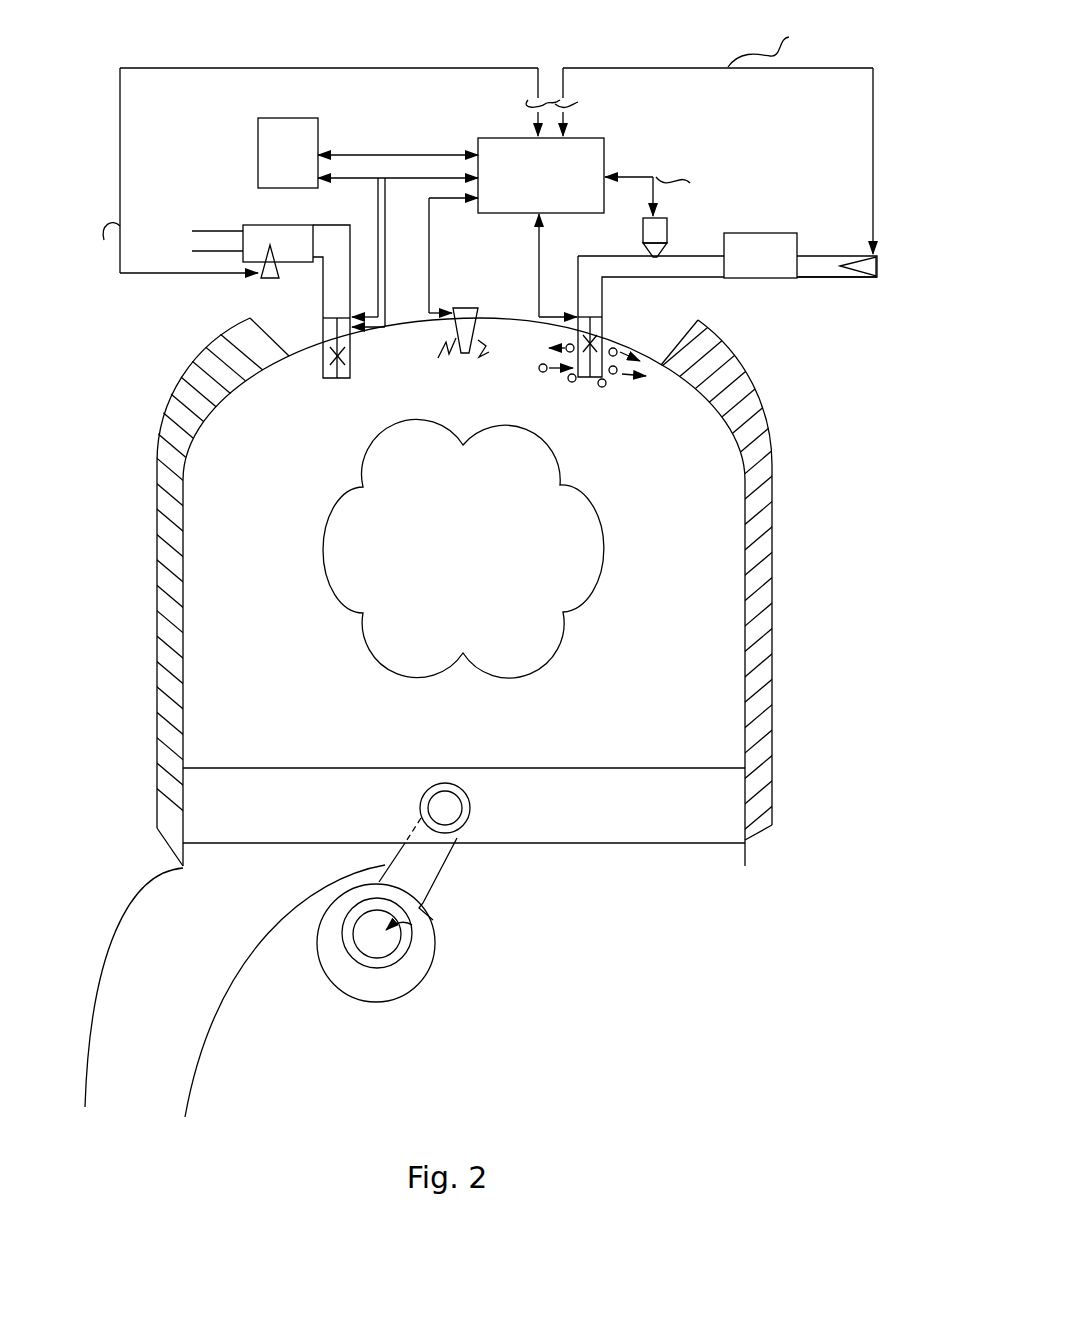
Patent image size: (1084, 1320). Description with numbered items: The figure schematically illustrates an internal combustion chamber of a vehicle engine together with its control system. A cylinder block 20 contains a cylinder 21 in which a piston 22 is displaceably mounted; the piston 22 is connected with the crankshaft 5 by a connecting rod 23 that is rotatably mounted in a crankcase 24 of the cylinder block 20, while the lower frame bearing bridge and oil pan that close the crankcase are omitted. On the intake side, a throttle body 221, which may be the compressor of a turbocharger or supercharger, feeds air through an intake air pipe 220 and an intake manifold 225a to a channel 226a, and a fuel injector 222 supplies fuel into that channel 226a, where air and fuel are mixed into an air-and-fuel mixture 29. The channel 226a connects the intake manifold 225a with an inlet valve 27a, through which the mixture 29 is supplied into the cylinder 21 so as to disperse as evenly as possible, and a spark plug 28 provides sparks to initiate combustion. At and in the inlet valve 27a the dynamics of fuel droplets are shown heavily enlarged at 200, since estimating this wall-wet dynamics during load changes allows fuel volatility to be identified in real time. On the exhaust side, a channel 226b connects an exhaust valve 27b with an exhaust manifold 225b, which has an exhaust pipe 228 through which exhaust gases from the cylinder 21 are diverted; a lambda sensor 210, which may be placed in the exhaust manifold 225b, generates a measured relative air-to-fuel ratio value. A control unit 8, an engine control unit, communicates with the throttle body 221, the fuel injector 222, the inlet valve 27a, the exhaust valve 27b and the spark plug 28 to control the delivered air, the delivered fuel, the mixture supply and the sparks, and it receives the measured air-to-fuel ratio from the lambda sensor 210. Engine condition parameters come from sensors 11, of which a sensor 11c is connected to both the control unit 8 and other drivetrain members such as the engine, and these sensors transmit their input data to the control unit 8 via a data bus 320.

The crankshaft 5 is at (433, 940).
The control unit 8 is at (478, 141).
The sensors 11 is at (270, 280).
The sensor 11c is at (258, 153).
The cylinder block 20 is at (229, 330).
The cylinder 21 is at (308, 707).
The piston 22 is at (464, 805).
The connecting rod 23 is at (445, 858).
The crankcase 24 is at (235, 991).
The inlet valve 27a is at (608, 336).
The exhaust valve 27b is at (353, 345).
The spark plug 28 is at (480, 313).
The air-and-fuel mixture 29 is at (592, 286).
The fuel droplets 200 is at (592, 377).
The lambda sensor 210 is at (290, 295).
The intake air pipe 220 is at (826, 279).
The throttle body 221 is at (879, 266).
The fuel injector 222 is at (640, 240).
The intake manifold 225a is at (765, 233).
The exhaust manifold 225b is at (227, 219).
The channel 226a is at (702, 278).
The channel 226b is at (352, 238).
The exhaust pipe 228 is at (205, 231).
The data bus 320 is at (390, 162).